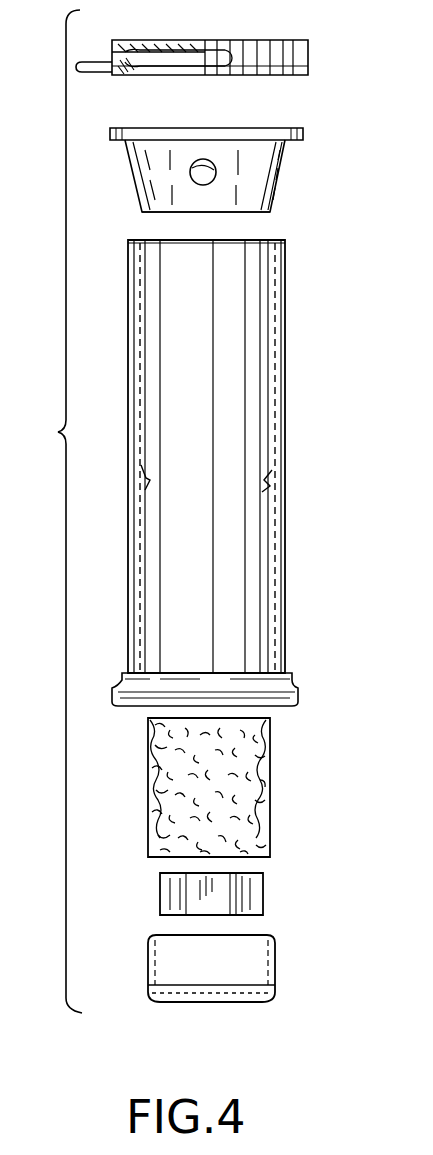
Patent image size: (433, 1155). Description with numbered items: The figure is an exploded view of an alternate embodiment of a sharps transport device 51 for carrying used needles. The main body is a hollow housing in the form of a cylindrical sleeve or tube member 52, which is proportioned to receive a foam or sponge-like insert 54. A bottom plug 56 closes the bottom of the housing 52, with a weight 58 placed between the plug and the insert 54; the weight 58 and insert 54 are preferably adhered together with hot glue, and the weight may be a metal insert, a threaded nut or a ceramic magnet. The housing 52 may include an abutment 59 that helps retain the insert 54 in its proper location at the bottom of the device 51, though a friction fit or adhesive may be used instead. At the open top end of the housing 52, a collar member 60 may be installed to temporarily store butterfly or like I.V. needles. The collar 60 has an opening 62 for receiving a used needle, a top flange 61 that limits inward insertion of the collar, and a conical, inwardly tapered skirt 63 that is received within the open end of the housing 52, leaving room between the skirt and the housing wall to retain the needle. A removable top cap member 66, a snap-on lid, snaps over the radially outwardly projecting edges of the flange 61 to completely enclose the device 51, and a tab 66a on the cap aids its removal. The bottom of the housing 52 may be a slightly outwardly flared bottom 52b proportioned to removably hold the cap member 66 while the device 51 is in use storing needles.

The transport device 51 is at (50, 511).
The tube member 52 is at (236, 473).
The outwardly flared bottom 52b is at (295, 690).
The insert 54 is at (265, 765).
The bottom plug 56 is at (275, 960).
The weight 58 is at (255, 888).
The abutment 59 is at (290, 465).
The collar member 60 is at (234, 162).
The top flange 61 is at (298, 132).
The opening 62 is at (205, 159).
The skirt 63 is at (272, 211).
The top cap member 66 is at (252, 40).
The tab 66a is at (96, 62).